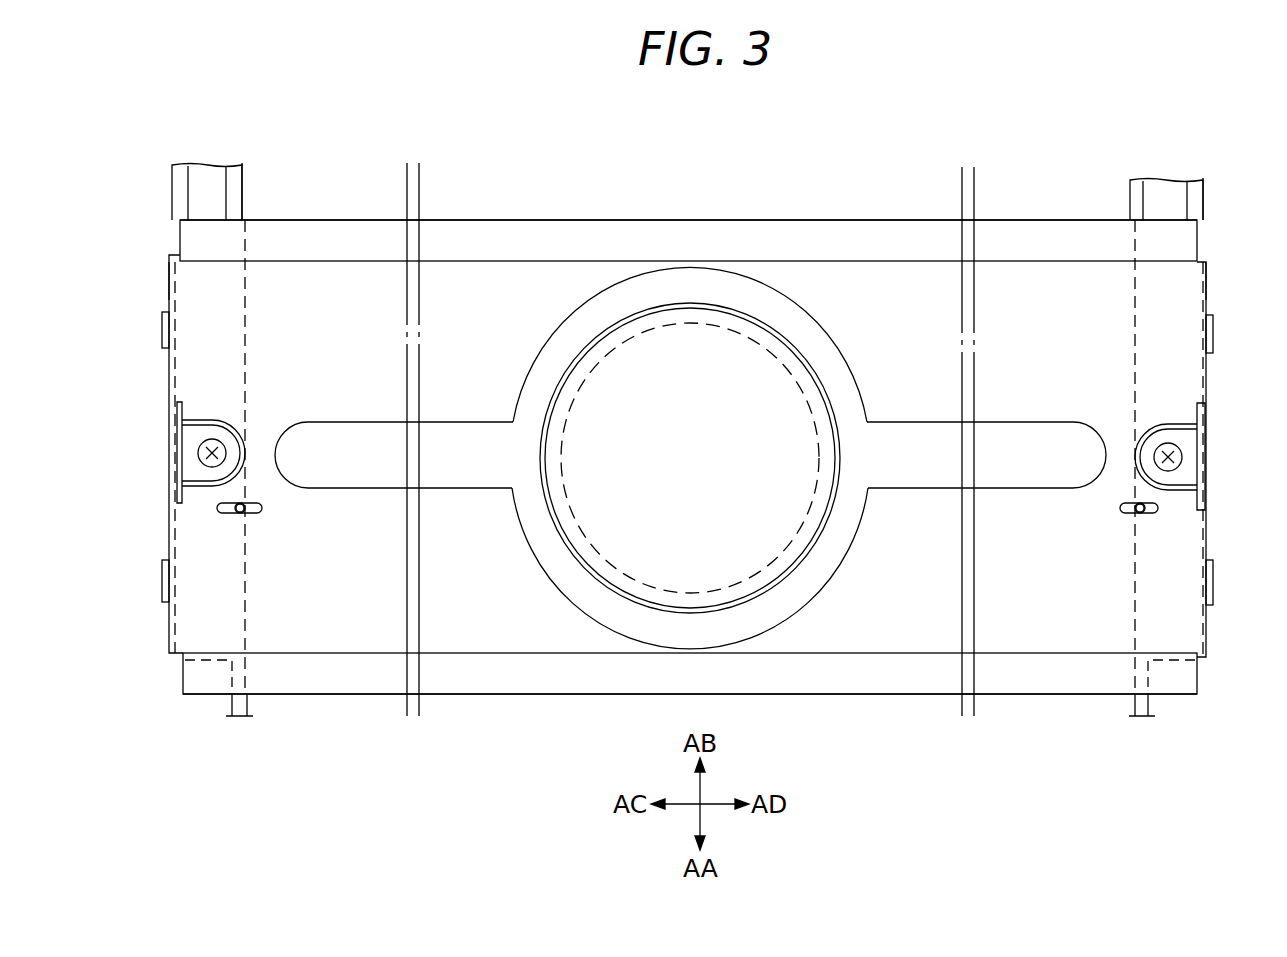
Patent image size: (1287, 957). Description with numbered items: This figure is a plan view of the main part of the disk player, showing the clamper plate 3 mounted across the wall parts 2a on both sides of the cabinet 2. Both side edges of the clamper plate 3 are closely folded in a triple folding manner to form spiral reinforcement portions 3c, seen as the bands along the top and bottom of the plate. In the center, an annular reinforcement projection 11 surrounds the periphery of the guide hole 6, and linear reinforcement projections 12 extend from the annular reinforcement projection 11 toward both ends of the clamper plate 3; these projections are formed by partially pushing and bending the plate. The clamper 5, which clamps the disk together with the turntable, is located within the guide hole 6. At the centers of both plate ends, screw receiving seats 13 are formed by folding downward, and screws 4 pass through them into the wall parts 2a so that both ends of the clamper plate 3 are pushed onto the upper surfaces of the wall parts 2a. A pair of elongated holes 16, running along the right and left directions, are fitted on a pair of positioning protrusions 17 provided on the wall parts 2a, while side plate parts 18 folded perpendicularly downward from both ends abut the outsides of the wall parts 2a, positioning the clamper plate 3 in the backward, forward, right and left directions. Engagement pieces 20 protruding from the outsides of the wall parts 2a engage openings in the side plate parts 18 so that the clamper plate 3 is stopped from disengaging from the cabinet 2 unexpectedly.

The cabinet 2 is at (1205, 197).
The wall parts 2a is at (205, 183).
The clamper plate 3 is at (632, 220).
The spiral reinforcement portions 3c is at (781, 232).
The screws 4 is at (207, 446).
The clamper 5 is at (606, 372).
The guide hole 6 is at (595, 540).
The annular reinforcement projection 11 is at (840, 547).
The linear reinforcement projections 12 is at (350, 425).
The screw receiving seats 13 is at (194, 453).
The elongated holes 16 is at (238, 513).
The positioning protrusions 17 is at (217, 508).
The side plate parts 18 is at (169, 271).
The engagement pieces 20 is at (162, 330).